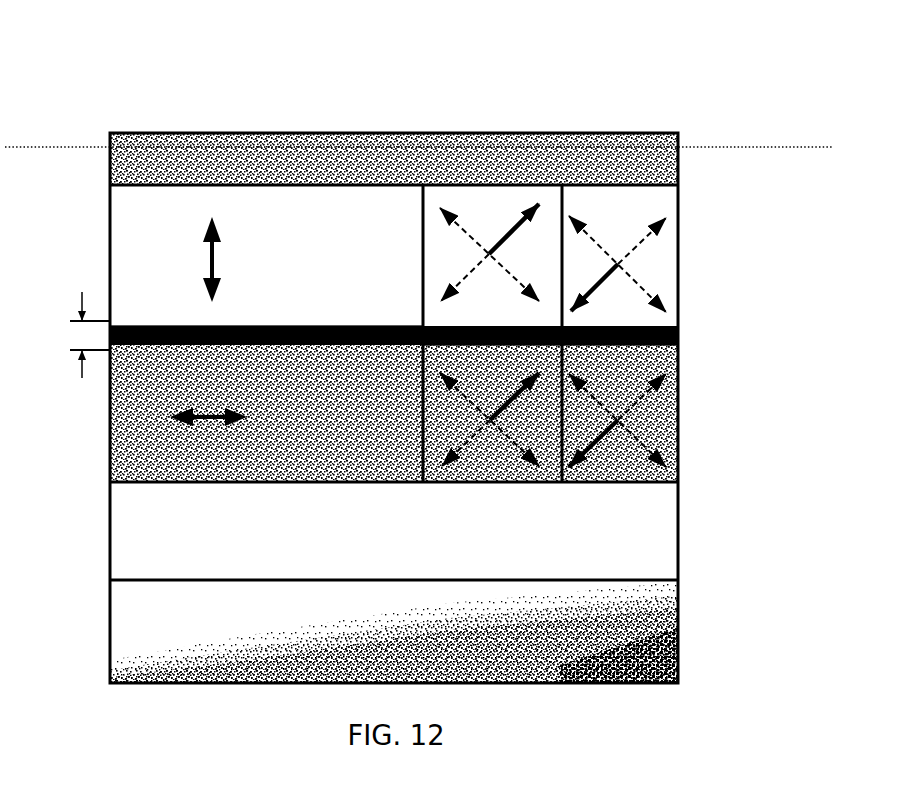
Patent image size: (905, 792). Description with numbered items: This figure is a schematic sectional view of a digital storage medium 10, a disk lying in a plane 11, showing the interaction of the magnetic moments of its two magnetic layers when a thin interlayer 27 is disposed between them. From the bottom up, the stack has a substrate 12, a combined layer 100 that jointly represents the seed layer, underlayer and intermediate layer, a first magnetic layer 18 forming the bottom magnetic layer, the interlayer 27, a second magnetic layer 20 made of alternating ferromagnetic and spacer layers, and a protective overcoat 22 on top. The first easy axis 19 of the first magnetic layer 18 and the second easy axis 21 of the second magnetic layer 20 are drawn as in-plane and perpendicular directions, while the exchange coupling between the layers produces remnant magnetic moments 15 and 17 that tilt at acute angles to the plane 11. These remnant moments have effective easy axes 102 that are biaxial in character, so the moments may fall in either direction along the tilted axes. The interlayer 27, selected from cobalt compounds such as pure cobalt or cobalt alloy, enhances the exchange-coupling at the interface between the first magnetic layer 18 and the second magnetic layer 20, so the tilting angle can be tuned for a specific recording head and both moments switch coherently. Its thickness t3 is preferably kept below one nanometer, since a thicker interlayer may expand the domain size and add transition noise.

The digital storage medium 10 is at (578, 82).
The plane 11 is at (745, 147).
The substrate 12 is at (394, 631).
The remnant magnetic moment M1 15 is at (510, 235).
The remnant magnetic moment M2 17 is at (517, 398).
The first magnetic layer 18 is at (394, 413).
The first easy axis 19 is at (177, 416).
The second magnetic layer 20 is at (266, 255).
The second easy axis 21 is at (212, 260).
The protective overcoat 22 is at (394, 159).
The interlayer 27 is at (678, 335).
The combined layer 100 is at (394, 531).
The effective easy axes 102 is at (505, 428).
The thickness of layer 27 t3 is at (90, 335).